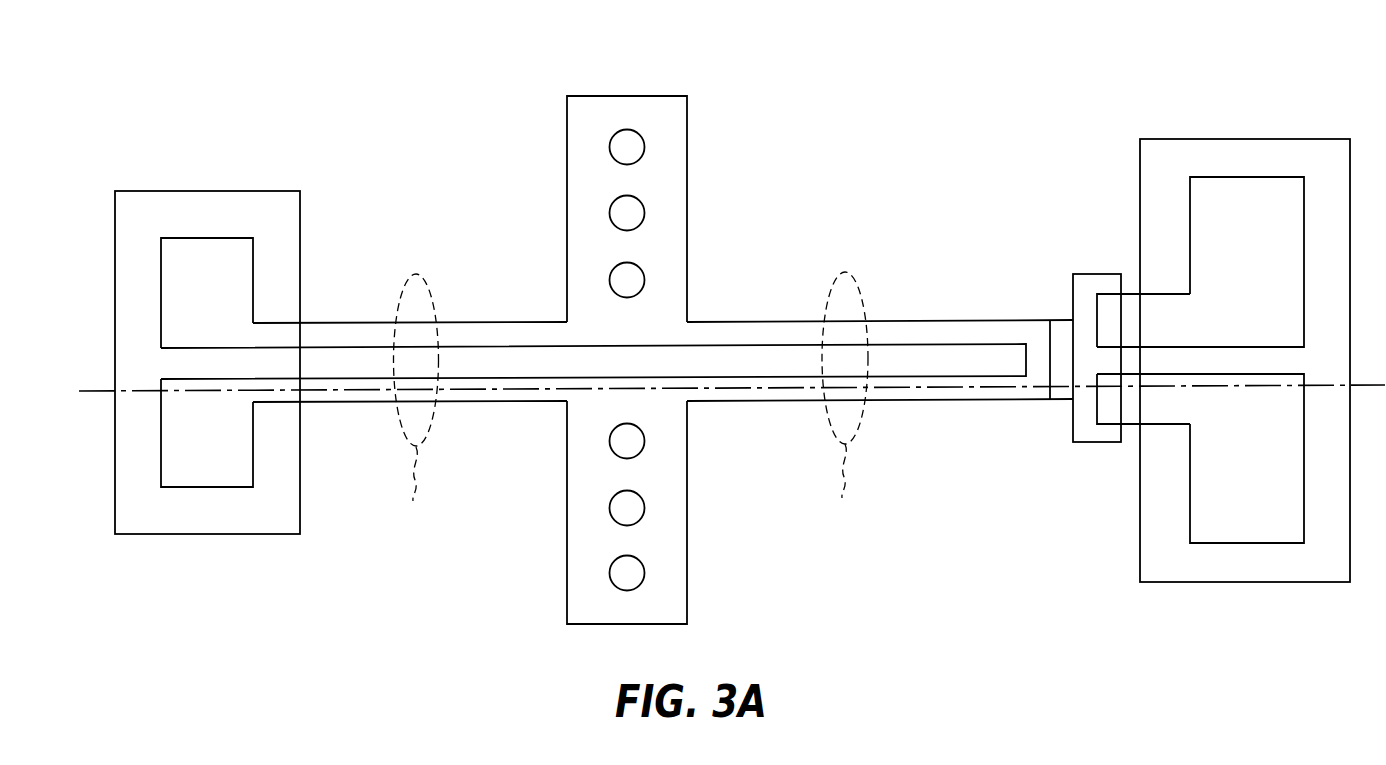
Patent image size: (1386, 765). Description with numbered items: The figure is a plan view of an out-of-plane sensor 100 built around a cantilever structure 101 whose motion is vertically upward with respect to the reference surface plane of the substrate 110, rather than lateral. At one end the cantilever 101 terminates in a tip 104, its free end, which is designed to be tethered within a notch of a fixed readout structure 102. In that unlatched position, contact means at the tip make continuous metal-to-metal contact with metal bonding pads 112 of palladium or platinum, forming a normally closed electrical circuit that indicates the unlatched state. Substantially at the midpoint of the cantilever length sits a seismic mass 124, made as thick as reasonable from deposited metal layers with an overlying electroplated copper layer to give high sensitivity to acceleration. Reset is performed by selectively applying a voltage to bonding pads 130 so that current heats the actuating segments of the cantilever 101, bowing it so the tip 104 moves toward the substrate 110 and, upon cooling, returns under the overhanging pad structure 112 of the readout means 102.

The out-of-plane sensor 100 is at (891, 208).
The cantilever structure 101 is at (977, 321).
The fixed readout structure 102 is at (1200, 139).
The tip 104 is at (1098, 264).
The substrate 110 is at (1100, 442).
The metal bonding pads 112 is at (1257, 258).
The seismic mass 124 is at (687, 177).
The bonding pads 130 is at (219, 300).